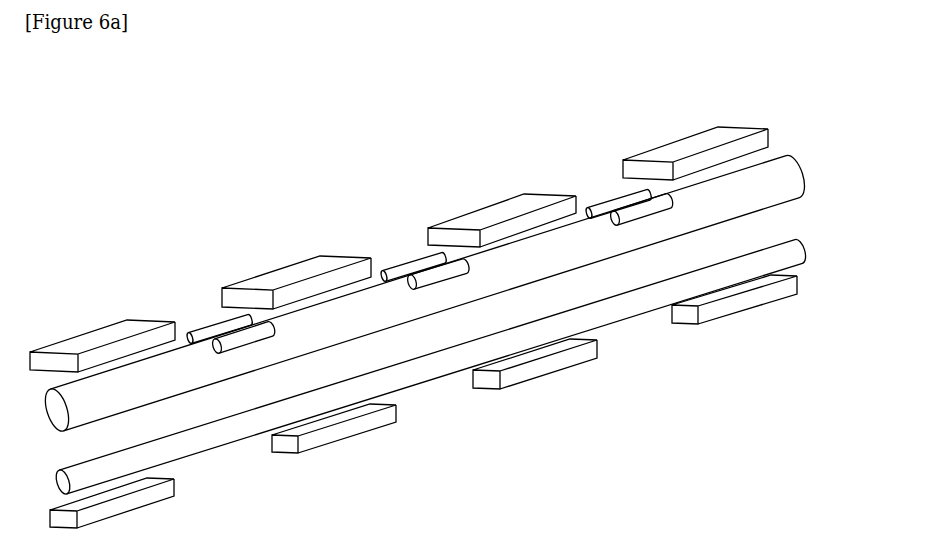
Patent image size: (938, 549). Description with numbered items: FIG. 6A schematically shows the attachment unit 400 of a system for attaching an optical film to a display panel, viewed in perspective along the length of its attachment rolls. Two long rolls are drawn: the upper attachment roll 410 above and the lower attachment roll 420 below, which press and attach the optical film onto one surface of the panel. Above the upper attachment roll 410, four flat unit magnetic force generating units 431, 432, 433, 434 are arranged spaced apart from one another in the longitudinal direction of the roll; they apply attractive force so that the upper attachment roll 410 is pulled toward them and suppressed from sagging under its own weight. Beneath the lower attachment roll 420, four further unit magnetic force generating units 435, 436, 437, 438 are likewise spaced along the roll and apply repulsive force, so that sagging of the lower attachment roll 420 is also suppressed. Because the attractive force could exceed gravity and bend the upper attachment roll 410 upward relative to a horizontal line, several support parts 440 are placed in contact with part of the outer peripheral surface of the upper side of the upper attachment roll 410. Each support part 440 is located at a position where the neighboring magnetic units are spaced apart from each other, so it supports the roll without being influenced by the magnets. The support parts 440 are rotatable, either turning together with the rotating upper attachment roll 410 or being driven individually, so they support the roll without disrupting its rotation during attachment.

The attachment unit 400 is at (396, 169).
The upper attachment roll 410 is at (782, 172).
The lower attachment roll 420 is at (793, 247).
The unit magnetic force generating unit 431 is at (112, 334).
The unit magnetic force generating unit 432 is at (306, 273).
The unit magnetic force generating unit 433 is at (517, 209).
The unit magnetic force generating unit 434 is at (697, 147).
The unit magnetic force generating unit 435 is at (155, 499).
The unit magnetic force generating unit 436 is at (363, 424).
The unit magnetic force generating unit 437 is at (563, 360).
The unit magnetic force generating unit 438 is at (776, 293).
The support part 440 is at (616, 198).